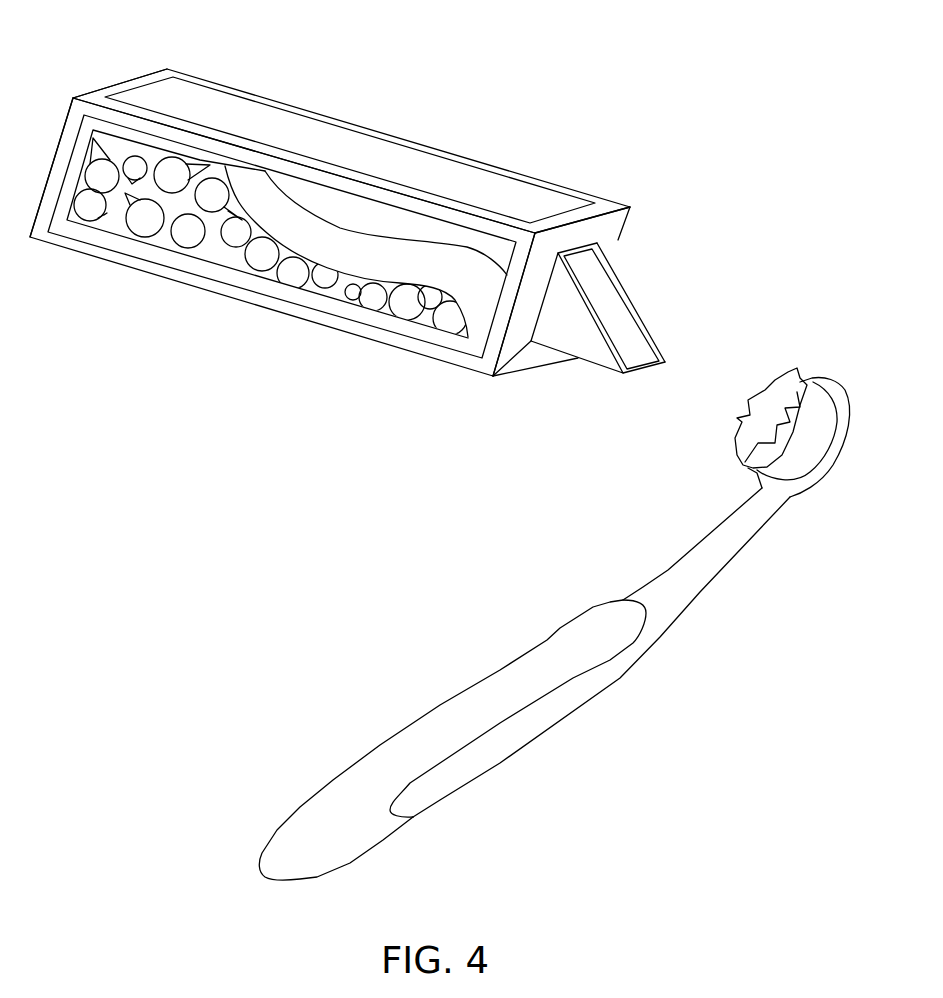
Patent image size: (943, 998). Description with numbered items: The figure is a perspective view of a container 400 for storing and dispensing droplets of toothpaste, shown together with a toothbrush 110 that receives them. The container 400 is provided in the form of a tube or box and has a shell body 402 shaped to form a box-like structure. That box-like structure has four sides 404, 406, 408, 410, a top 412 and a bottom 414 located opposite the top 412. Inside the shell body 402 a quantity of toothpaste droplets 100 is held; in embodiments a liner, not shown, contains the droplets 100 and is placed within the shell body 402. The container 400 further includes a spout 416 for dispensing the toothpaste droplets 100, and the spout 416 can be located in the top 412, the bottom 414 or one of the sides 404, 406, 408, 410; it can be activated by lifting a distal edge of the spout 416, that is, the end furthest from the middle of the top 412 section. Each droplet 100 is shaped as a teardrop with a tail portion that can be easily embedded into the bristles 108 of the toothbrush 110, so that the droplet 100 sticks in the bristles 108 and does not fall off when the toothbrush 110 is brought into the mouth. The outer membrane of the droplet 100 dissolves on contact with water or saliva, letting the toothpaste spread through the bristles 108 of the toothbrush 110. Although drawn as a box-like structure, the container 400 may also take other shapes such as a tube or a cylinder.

The toothpaste droplet 100 is at (184, 247).
The bristles 108 is at (762, 397).
The toothbrush 110 is at (818, 486).
The container 400 is at (372, 80).
The shell body 402 is at (255, 98).
The side 404 is at (488, 358).
The side 406 is at (630, 208).
The side 408 is at (531, 185).
The side 410 is at (533, 369).
The top 412 is at (618, 241).
The bottom 414 is at (120, 84).
The spout 416 is at (648, 304).